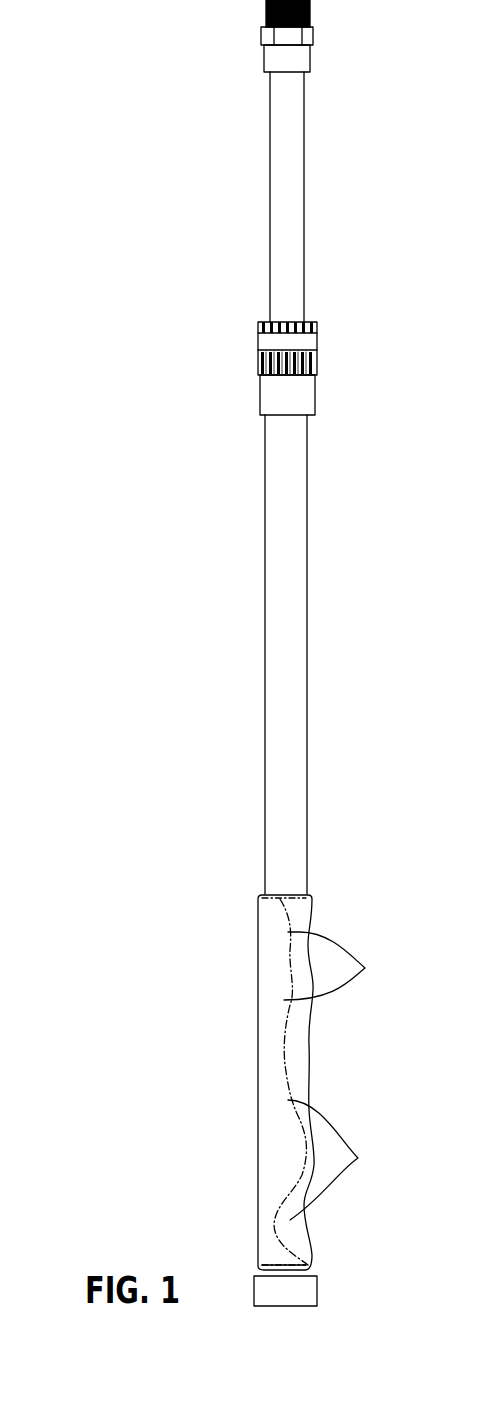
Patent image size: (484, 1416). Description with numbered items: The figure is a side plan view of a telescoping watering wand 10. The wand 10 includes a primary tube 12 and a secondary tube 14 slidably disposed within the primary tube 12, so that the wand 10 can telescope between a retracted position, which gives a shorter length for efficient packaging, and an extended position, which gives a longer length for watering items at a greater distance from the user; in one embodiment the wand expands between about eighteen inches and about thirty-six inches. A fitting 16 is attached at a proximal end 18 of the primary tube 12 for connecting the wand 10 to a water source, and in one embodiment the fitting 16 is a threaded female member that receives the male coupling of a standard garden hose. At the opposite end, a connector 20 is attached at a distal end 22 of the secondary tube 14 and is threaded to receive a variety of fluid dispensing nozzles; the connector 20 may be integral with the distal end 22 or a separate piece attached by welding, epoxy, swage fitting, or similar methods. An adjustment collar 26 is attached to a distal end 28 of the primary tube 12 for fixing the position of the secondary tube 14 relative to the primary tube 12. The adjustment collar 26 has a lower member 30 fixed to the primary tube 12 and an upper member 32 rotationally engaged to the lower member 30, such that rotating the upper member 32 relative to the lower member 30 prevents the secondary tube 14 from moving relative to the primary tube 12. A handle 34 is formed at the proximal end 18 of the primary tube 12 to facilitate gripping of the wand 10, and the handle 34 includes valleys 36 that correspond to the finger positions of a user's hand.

The telescoping watering wand 10 is at (113, 137).
The primary tube 12 is at (300, 616).
The secondary tube 14 is at (293, 165).
The fitting 16 is at (307, 1290).
The proximal end 18 is at (312, 1262).
The connector 20 is at (313, 38).
The distal end 22 is at (305, 85).
The adjustment collar 26 is at (283, 348).
The distal end 28 is at (308, 420).
The lower member 30 is at (257, 365).
The upper member 32 is at (258, 338).
The handle 34 is at (265, 1054).
The valleys 36 is at (365, 968).